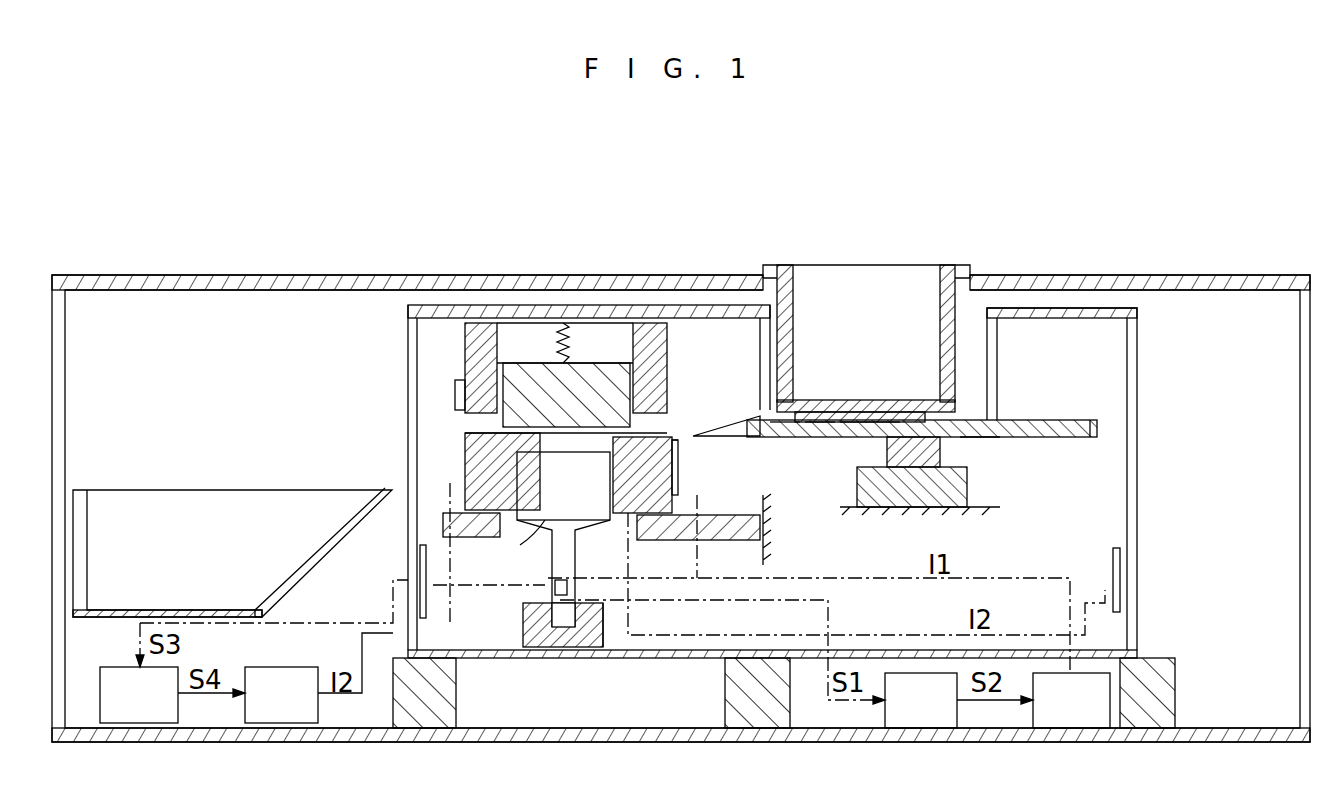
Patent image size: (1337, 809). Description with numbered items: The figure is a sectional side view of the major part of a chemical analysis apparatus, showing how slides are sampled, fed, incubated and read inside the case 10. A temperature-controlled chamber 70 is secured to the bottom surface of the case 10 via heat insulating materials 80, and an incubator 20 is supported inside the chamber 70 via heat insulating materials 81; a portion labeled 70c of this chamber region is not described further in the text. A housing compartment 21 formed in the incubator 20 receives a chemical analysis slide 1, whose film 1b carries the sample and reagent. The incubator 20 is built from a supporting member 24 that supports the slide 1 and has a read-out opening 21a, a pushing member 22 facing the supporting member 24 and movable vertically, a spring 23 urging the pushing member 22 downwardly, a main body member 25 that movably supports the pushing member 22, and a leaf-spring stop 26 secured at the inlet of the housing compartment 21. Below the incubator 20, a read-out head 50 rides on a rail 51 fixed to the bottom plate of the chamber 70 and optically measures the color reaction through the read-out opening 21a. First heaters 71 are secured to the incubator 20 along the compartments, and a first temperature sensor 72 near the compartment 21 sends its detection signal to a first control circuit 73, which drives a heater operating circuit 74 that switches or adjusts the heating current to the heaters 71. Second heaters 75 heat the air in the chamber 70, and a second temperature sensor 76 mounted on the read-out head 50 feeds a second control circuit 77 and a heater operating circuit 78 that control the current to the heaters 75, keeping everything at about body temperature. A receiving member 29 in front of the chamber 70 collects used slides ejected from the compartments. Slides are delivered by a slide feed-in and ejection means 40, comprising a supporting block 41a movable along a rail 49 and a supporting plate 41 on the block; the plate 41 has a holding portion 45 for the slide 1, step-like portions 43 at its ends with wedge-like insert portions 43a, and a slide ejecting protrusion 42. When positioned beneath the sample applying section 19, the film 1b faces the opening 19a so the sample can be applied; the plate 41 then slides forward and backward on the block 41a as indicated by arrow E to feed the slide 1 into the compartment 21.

The chemical analysis slide 1 is at (822, 440).
The film 1b is at (860, 438).
The case 10 is at (286, 275).
The sample applying section 19 is at (875, 288).
The opening 19a is at (868, 400).
The incubator 20 is at (433, 330).
The housing compartment 21 is at (460, 395).
The read-out opening 21a is at (513, 545).
The pushing member 22 is at (600, 362).
The spring 23 is at (588, 318).
The supporting member 24 is at (465, 445).
The main body member 25 is at (465, 325).
The leaf-spring stop 26 is at (678, 455).
The receiving member 29 is at (125, 490).
The slide feed-in and ejection means 40 is at (928, 411).
The supporting plate 41 is at (1078, 437).
The supporting block 41a is at (975, 443).
The slide ejecting protrusion 42 is at (746, 440).
The step-like portion 43 is at (793, 412).
The wedge-like insert portion 43a is at (740, 416).
The holding portion 45 is at (790, 442).
The rail 49 is at (972, 500).
The read-out head 50 is at (598, 556).
The rail 51 is at (608, 605).
The temperature-controlled chamber 70 is at (492, 300).
The casing portion 70c is at (465, 408).
The first heater 71 is at (670, 318).
The first temperature sensor 72 is at (553, 440).
The first control circuit 73 is at (903, 715).
The heater operating circuit 74 is at (1051, 715).
The second heater 75 is at (1170, 603).
The second temperature sensor 76 is at (547, 590).
The second control circuit 77 is at (155, 710).
The heater operating circuit 78 is at (295, 710).
The heat insulating material 80 is at (415, 712).
The heat insulating material 81 is at (395, 508).
The arrow E is at (1220, 433).